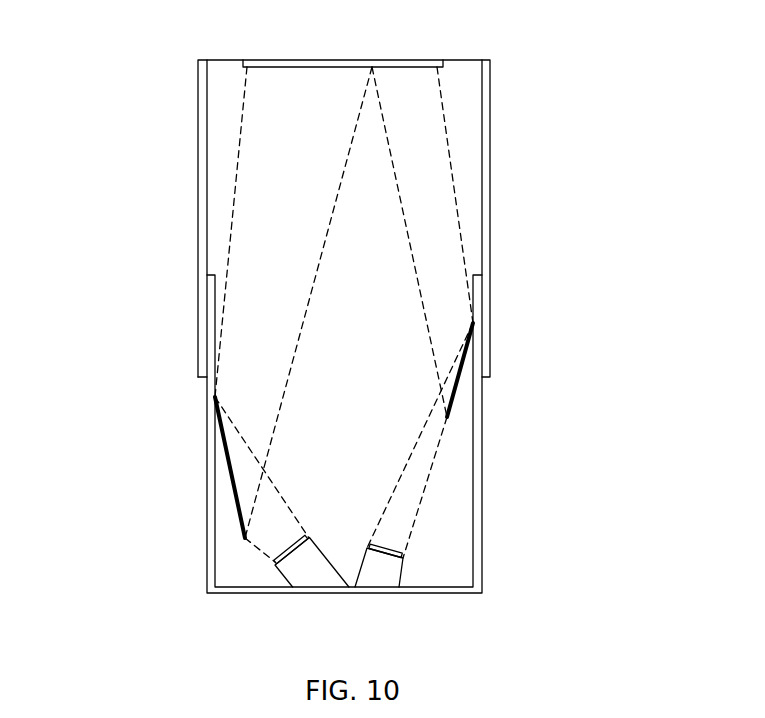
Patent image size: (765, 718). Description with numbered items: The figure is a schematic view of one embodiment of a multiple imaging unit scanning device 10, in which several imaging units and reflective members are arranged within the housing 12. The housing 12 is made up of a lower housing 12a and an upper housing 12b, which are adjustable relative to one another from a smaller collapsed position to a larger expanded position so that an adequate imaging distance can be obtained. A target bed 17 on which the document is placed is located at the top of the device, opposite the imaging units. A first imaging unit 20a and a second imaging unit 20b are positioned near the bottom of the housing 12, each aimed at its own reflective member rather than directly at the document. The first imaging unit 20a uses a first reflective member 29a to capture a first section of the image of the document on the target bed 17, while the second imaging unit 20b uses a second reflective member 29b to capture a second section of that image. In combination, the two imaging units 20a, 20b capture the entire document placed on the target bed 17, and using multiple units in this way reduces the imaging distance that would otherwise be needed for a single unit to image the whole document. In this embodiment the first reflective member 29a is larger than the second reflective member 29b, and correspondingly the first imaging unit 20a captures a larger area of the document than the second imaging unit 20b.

The device 10 is at (150, 151).
The housing 12 is at (534, 273).
The lower housing 12a is at (483, 508).
The upper housing 12b is at (490, 95).
The target bed 17 is at (387, 60).
The first imaging unit 20a is at (318, 572).
The second imaging unit 20b is at (378, 572).
The first reflective member 29a is at (225, 460).
The second reflective member 29b is at (457, 395).